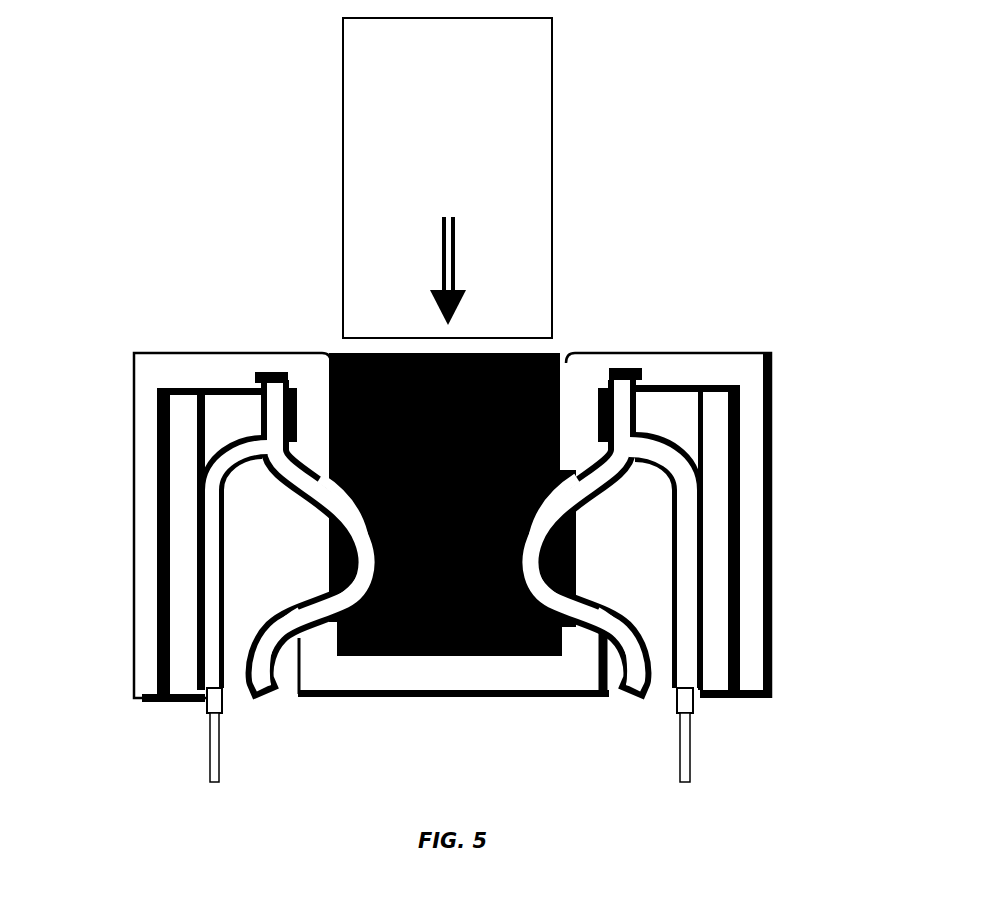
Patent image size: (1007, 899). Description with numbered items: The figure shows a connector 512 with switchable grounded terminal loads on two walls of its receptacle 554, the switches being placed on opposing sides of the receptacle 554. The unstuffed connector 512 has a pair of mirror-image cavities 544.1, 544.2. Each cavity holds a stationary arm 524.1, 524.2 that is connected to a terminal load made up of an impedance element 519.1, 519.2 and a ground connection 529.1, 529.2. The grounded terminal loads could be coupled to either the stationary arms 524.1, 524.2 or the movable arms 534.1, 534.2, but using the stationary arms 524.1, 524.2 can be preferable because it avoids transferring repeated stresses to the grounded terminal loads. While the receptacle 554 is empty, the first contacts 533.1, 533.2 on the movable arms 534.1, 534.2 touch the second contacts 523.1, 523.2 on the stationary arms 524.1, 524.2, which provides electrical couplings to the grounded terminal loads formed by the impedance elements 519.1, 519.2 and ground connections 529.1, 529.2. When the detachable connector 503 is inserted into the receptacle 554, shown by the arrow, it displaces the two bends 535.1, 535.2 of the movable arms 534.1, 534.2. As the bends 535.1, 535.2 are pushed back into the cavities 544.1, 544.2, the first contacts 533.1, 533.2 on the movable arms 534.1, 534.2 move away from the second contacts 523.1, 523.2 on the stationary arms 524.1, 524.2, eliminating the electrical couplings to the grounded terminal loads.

The detachable connector 503 is at (465, 166).
The connector 512 is at (453, 525).
The impedance element 519.1 is at (207, 705).
The impedance element 519.2 is at (693, 708).
The second contact 523.1 is at (290, 411).
The second contact 523.2 is at (600, 410).
The stationary arm 524.1 is at (236, 512).
The stationary arm 524.2 is at (668, 507).
The ground connection 529.1 is at (210, 750).
The ground connection 529.2 is at (692, 745).
The first contact 533.1 is at (288, 391).
The first contact 533.2 is at (600, 388).
The movable arm 534.1 is at (283, 618).
The movable arm 534.2 is at (612, 614).
The bend 535.1 is at (397, 537).
The bend 535.2 is at (520, 565).
The cavity 544.1 is at (255, 423).
The cavity 544.2 is at (697, 423).
The receptacle 554 is at (465, 626).